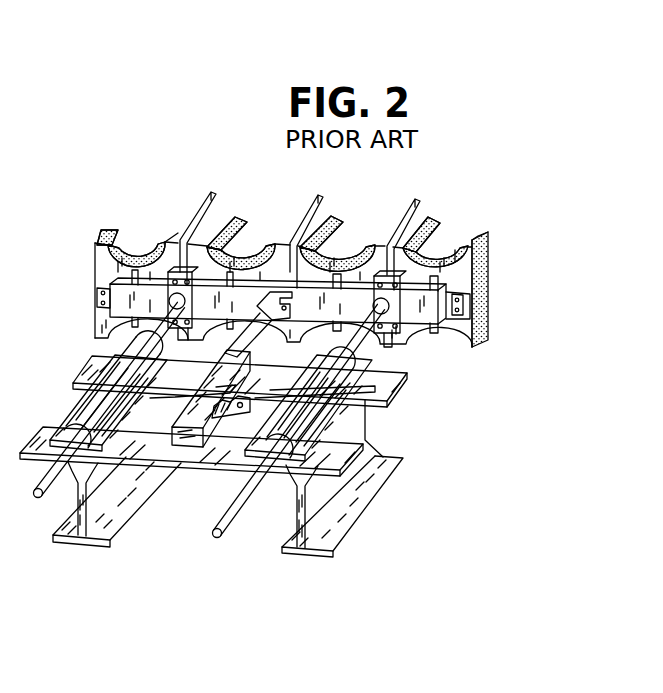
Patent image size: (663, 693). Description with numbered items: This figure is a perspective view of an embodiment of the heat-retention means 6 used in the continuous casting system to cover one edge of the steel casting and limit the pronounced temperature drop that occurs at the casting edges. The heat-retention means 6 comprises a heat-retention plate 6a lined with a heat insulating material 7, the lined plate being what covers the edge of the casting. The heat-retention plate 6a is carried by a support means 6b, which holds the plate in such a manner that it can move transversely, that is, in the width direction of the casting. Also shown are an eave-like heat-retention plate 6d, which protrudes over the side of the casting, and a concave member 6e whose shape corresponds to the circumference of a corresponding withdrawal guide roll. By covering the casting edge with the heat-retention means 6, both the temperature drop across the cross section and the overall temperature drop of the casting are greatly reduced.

The heat-retention means 6 is at (422, 394).
The heat-retention plate 6a is at (461, 330).
The support means 6b is at (62, 412).
The eave-like heat-retention plate 6d is at (219, 215).
The concave member 6e is at (108, 258).
The heat insulating material 7 is at (238, 221).